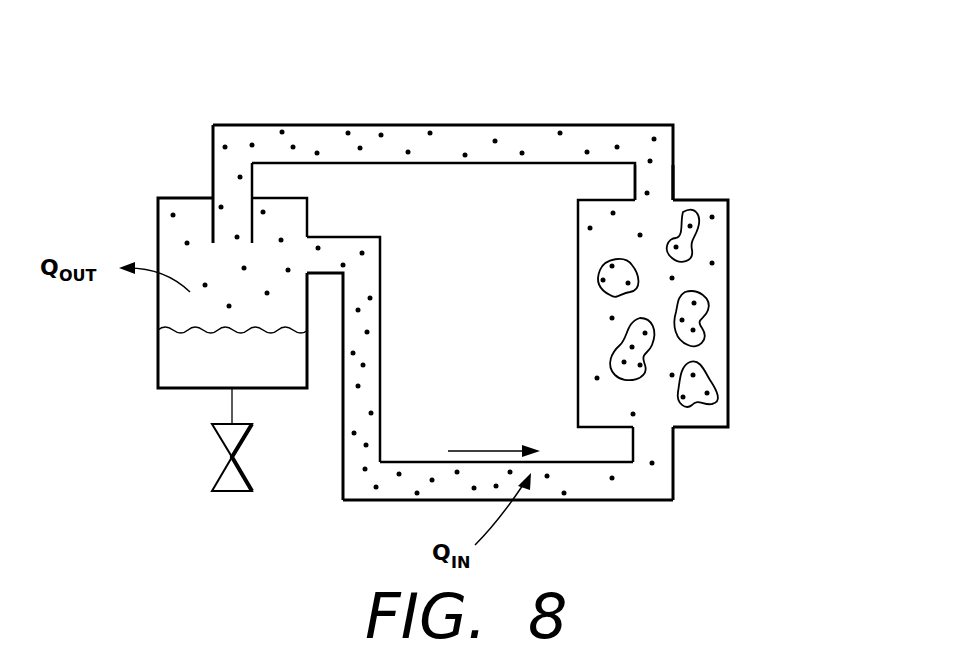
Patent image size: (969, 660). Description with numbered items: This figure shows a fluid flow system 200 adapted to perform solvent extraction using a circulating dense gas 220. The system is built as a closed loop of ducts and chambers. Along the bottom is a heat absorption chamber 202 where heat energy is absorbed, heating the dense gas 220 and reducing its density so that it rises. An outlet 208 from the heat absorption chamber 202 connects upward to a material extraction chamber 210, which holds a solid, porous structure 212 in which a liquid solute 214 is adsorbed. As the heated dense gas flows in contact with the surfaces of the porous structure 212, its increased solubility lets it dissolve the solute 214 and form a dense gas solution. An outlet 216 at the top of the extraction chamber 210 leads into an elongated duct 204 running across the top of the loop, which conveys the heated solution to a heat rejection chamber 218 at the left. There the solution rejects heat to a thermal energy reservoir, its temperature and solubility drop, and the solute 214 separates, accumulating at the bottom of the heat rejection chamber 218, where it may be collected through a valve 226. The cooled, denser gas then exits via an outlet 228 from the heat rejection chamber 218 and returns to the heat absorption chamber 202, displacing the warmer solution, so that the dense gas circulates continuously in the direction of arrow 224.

The fluid flow system 200 is at (758, 96).
The heat absorption chamber 202 is at (550, 503).
The elongated duct 204 is at (522, 126).
The outlet 208 is at (652, 440).
The material extraction chamber 210 is at (730, 313).
The solid porous structure 212 is at (606, 278).
The solute 214 is at (692, 228).
The outlet 216 is at (655, 191).
The heat rejection chamber 218 is at (158, 222).
The dense gas 220 is at (348, 133).
The arrow 224 is at (484, 450).
The valve 226 is at (222, 441).
The outlet 228 is at (312, 262).